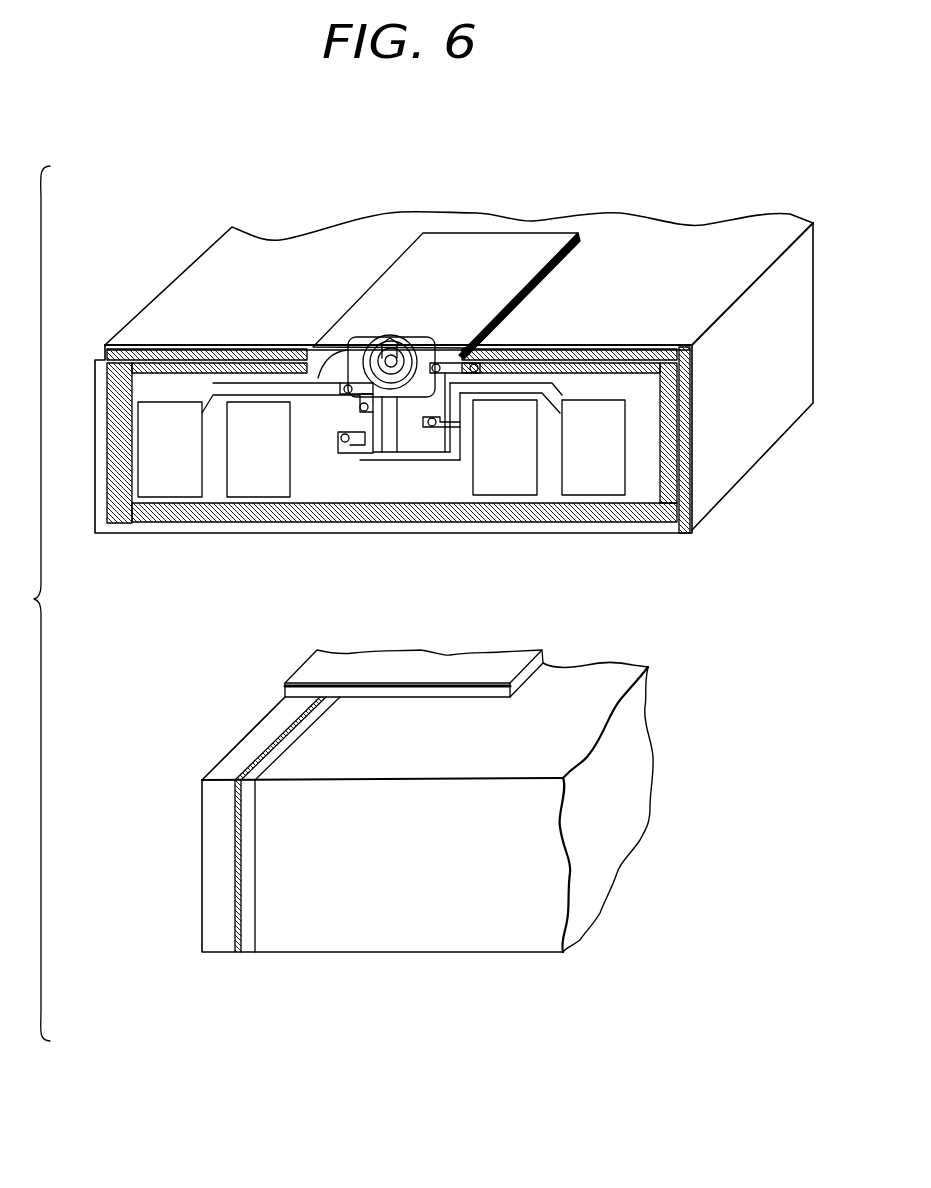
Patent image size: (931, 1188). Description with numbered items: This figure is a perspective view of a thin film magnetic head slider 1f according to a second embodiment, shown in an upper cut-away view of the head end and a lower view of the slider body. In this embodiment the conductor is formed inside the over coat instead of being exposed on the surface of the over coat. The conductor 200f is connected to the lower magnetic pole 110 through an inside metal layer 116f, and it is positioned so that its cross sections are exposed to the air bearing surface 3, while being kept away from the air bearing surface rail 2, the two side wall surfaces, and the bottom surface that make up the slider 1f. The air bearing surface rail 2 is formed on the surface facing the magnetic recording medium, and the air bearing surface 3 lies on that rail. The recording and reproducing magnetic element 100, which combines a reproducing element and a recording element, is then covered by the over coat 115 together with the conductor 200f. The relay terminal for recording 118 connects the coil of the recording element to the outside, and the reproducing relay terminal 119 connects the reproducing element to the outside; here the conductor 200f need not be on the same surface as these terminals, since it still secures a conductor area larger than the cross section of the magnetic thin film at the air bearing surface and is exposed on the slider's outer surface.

The air bearing surface 3 is at (203, 267).
The air bearing surface rail 2 is at (533, 243).
The lower magnetic pole 110 is at (420, 337).
The thin film magnetic head slider 1f is at (753, 430).
The relay terminal for recording 118 is at (170, 478).
The recording and reproducing magnetic element 100 is at (328, 445).
The inside metal layer 116f is at (440, 370).
The reproducing relay terminal 119 is at (508, 478).
The over coat 115 is at (683, 525).
The conductor 200f is at (115, 517).